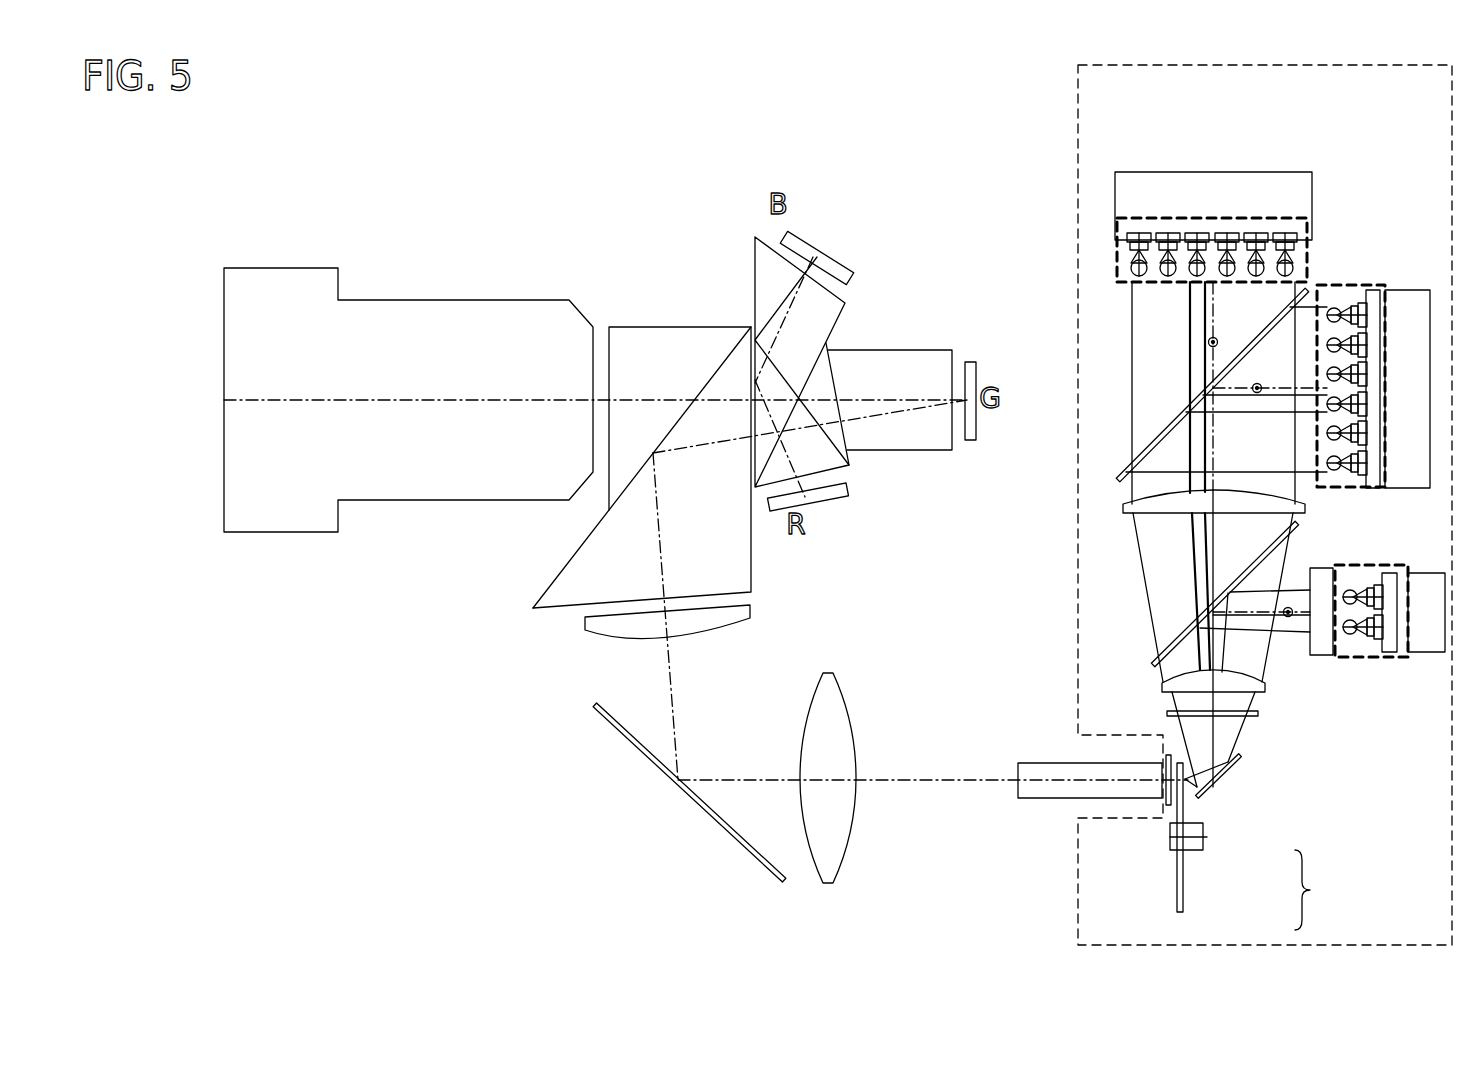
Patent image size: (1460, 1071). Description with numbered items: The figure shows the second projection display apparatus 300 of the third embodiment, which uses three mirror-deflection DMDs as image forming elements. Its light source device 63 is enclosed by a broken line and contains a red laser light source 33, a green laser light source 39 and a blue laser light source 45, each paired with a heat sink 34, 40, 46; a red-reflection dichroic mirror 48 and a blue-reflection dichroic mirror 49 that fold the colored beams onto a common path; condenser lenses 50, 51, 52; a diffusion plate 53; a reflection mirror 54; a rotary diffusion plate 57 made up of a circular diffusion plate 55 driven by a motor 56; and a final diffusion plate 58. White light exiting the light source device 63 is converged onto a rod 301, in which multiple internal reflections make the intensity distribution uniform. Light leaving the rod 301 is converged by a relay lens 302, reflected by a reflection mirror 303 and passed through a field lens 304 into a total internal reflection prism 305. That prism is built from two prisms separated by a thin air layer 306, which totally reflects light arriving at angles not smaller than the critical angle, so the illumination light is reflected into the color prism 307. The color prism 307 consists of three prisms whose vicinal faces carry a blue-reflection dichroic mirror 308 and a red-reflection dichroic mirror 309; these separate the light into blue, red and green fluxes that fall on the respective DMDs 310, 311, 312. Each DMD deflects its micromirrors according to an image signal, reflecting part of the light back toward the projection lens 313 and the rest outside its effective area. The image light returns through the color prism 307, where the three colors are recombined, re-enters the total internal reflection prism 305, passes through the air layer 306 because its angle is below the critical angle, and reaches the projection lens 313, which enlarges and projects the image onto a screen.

The second projection display apparatus 300 is at (280, 189).
The rod 301 is at (1045, 797).
The relay lens 302 is at (845, 857).
The reflection mirror 303 is at (745, 853).
The field lens 304 is at (750, 610).
The total internal reflection prism 305 is at (582, 563).
The air layer 306 is at (720, 363).
The color prism 307 is at (932, 433).
The blue-reflection dichroic mirror 308 is at (830, 343).
The red-reflection dichroic mirror 309 is at (837, 377).
The DMD 310 is at (808, 252).
The DMD 311 is at (826, 503).
The DMD 312 is at (980, 362).
The projection lens 313 is at (422, 300).
The light source device 63 is at (1076, 110).
The heat sink 40 is at (1302, 190).
The green laser light source 39 is at (1118, 245).
The red laser light source 33 is at (1335, 282).
The heat sink 34 is at (1407, 298).
The red-reflection dichroic mirror 48 is at (1125, 470).
The condenser lens 50 is at (1123, 512).
The blue-reflection dichroic mirror 49 is at (1160, 655).
The blue laser light source 45 is at (1357, 563).
The heat sink 46 is at (1438, 578).
The condenser lens 51 is at (1322, 645).
The condenser lens 52 is at (1158, 688).
The diffusion plate 53 is at (1258, 713).
The reflection mirror 54 is at (1240, 770).
The circular diffusion plate 55 is at (1183, 887).
The motor 56 is at (1203, 843).
The rotary diffusion plate 57 is at (1320, 890).
The diffusion plate 58 is at (1165, 758).